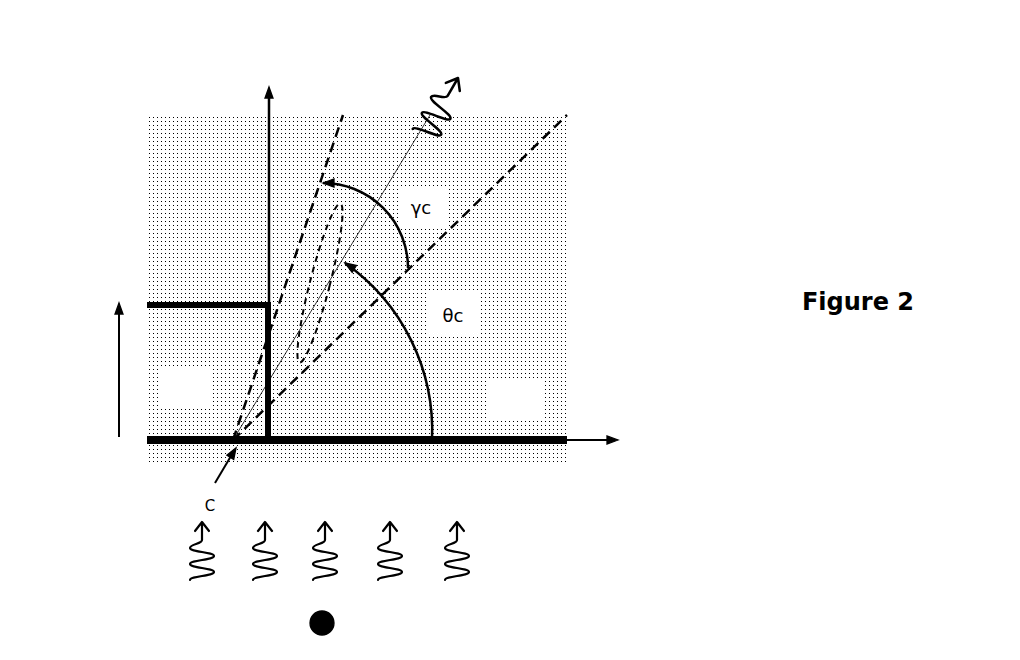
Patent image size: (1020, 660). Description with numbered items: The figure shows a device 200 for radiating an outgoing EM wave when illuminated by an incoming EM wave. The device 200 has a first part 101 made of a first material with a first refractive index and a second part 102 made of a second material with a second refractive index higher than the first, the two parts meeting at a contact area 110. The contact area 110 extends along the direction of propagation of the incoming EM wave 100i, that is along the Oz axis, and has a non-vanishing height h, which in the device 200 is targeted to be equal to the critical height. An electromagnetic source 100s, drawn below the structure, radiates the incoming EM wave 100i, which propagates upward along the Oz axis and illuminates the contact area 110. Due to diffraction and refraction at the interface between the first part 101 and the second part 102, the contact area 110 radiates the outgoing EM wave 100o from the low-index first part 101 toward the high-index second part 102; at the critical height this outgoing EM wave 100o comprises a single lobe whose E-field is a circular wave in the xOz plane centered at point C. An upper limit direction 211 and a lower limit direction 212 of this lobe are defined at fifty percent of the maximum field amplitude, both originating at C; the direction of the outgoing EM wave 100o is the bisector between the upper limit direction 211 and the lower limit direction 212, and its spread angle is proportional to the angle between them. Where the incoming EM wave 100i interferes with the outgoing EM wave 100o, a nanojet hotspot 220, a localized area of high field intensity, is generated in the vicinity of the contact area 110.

The device 200 is at (712, 98).
The contact area 110 is at (263, 330).
The first part 101 is at (160, 345).
The second part 102 is at (547, 257).
The upper limit direction 211 is at (342, 132).
The lower limit direction 212 is at (537, 150).
The nanojet hotspot 220 is at (330, 262).
The outgoing EM wave 100o is at (470, 98).
The incoming EM wave 100i is at (512, 556).
The electromagnetic source 100s is at (335, 622).